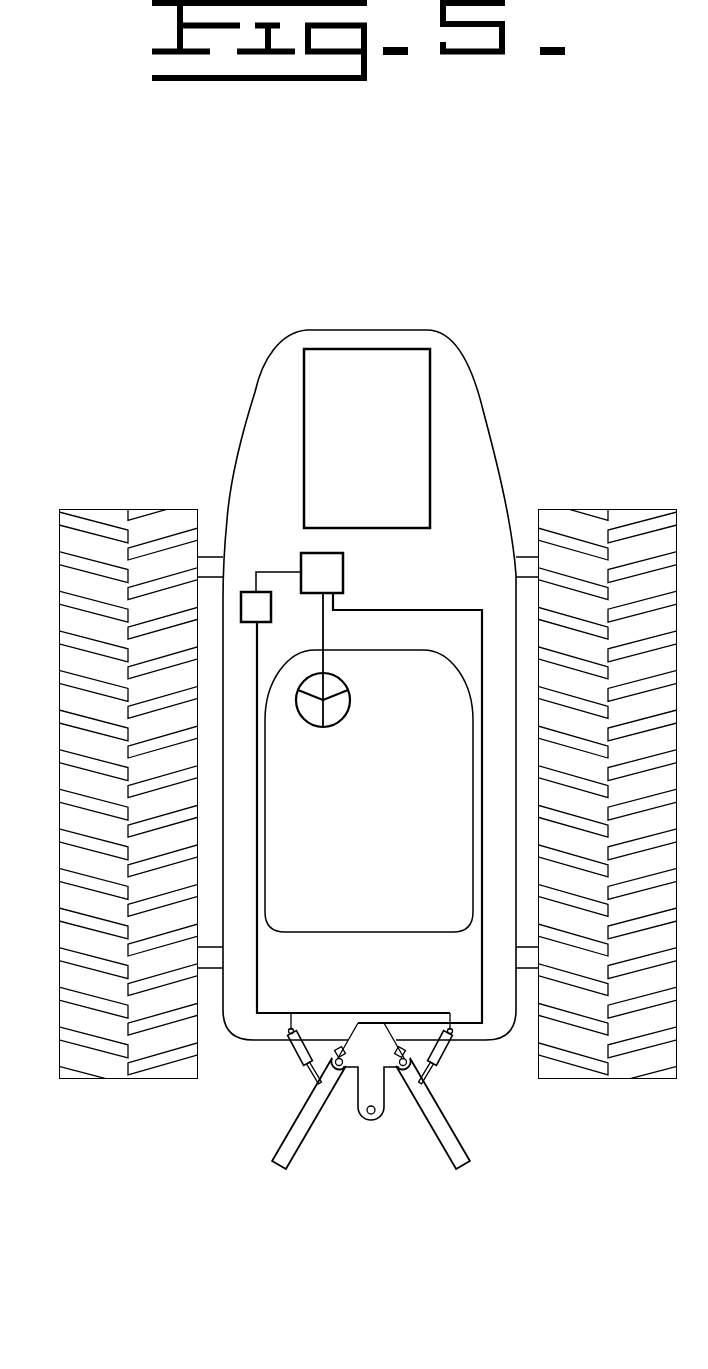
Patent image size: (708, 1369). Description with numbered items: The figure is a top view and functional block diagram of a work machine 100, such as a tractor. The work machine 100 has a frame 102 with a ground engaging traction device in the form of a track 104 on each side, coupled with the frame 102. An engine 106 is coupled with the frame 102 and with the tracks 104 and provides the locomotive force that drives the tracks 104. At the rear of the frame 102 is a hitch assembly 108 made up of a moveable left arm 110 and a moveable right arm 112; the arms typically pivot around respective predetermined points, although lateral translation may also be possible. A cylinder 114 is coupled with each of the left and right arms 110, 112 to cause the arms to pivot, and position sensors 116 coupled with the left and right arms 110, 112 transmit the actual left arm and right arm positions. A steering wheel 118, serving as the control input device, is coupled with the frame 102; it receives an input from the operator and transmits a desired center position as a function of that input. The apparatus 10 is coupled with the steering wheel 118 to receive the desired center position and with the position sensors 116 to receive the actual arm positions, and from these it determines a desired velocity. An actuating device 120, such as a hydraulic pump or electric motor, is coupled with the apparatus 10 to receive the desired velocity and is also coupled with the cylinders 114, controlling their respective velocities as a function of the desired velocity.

The work machine 100 is at (579, 262).
The frame 102 is at (257, 387).
The track 104 is at (76, 509).
The engine 106 is at (396, 349).
The apparatus 10 is at (343, 575).
The actuating device 120 is at (241, 603).
The steering wheel 118 is at (348, 712).
The hitch assembly 108 is at (336, 1256).
The left arm 110 is at (288, 1134).
The right arm 112 is at (457, 1127).
The cylinder 114 is at (288, 1050).
The position sensors 116 is at (395, 1068).